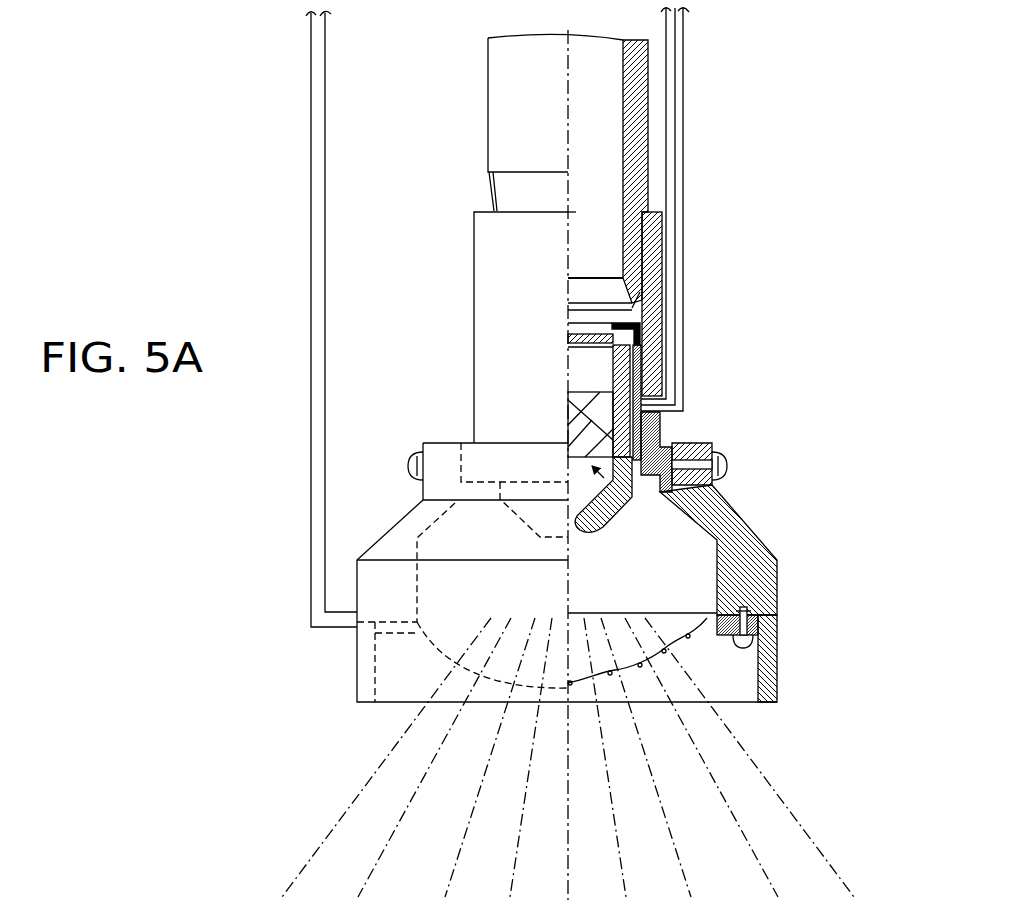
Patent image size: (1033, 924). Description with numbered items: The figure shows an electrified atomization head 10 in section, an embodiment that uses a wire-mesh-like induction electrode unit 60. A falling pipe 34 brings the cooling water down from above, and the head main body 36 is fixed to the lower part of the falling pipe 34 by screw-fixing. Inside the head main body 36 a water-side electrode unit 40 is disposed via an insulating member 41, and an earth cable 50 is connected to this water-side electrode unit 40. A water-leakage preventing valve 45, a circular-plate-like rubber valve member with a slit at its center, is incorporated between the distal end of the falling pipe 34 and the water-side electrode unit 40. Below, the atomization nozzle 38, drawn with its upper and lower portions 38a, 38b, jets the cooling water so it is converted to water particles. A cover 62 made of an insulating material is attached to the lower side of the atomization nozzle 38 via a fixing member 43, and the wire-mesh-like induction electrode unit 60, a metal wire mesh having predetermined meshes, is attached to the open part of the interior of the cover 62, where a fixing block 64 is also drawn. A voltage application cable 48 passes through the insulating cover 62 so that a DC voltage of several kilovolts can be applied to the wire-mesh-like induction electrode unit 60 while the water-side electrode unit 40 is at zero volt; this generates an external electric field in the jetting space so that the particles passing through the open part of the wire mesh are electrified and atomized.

The electrified atomization head 10 is at (264, 80).
The falling pipe 34 is at (526, 62).
The head main body 36 is at (487, 320).
The atomization nozzle 38 is at (627, 513).
The housing upper portion 38a is at (661, 423).
The housing lower portion 38b is at (613, 535).
The water-side electrode unit 40 is at (654, 352).
The insulating member 41 is at (661, 386).
The fixing member 43 is at (688, 483).
The water-leakage preventing valve 45 is at (654, 326).
The voltage application cable 48 is at (312, 180).
The earth cable 50 is at (690, 95).
The wire-mesh-like induction electrode unit 60 is at (700, 650).
The cover 62 is at (357, 668).
The fixing block 64 is at (777, 618).